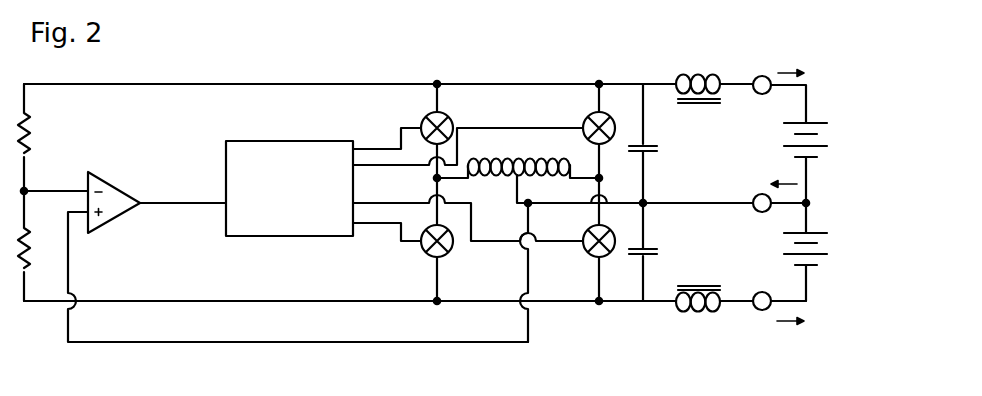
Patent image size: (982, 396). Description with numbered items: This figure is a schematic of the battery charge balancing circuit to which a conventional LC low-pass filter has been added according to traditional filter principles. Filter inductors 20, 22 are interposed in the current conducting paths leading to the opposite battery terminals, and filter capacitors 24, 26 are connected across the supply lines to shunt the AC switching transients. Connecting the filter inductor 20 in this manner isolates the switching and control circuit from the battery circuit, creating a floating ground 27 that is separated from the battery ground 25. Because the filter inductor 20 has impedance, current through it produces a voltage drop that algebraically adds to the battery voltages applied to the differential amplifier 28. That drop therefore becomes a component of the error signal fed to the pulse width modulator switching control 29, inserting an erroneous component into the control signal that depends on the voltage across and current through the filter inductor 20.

The filter inductor 20 is at (700, 310).
The filter inductor 22 is at (683, 77).
The filter capacitor 24 is at (657, 255).
The battery ground 25 is at (806, 303).
The filter capacitor 26 is at (657, 152).
The floating ground 27 is at (554, 305).
The differential amplifier 28 is at (115, 184).
The pulse width modulator switching control 29 is at (292, 238).